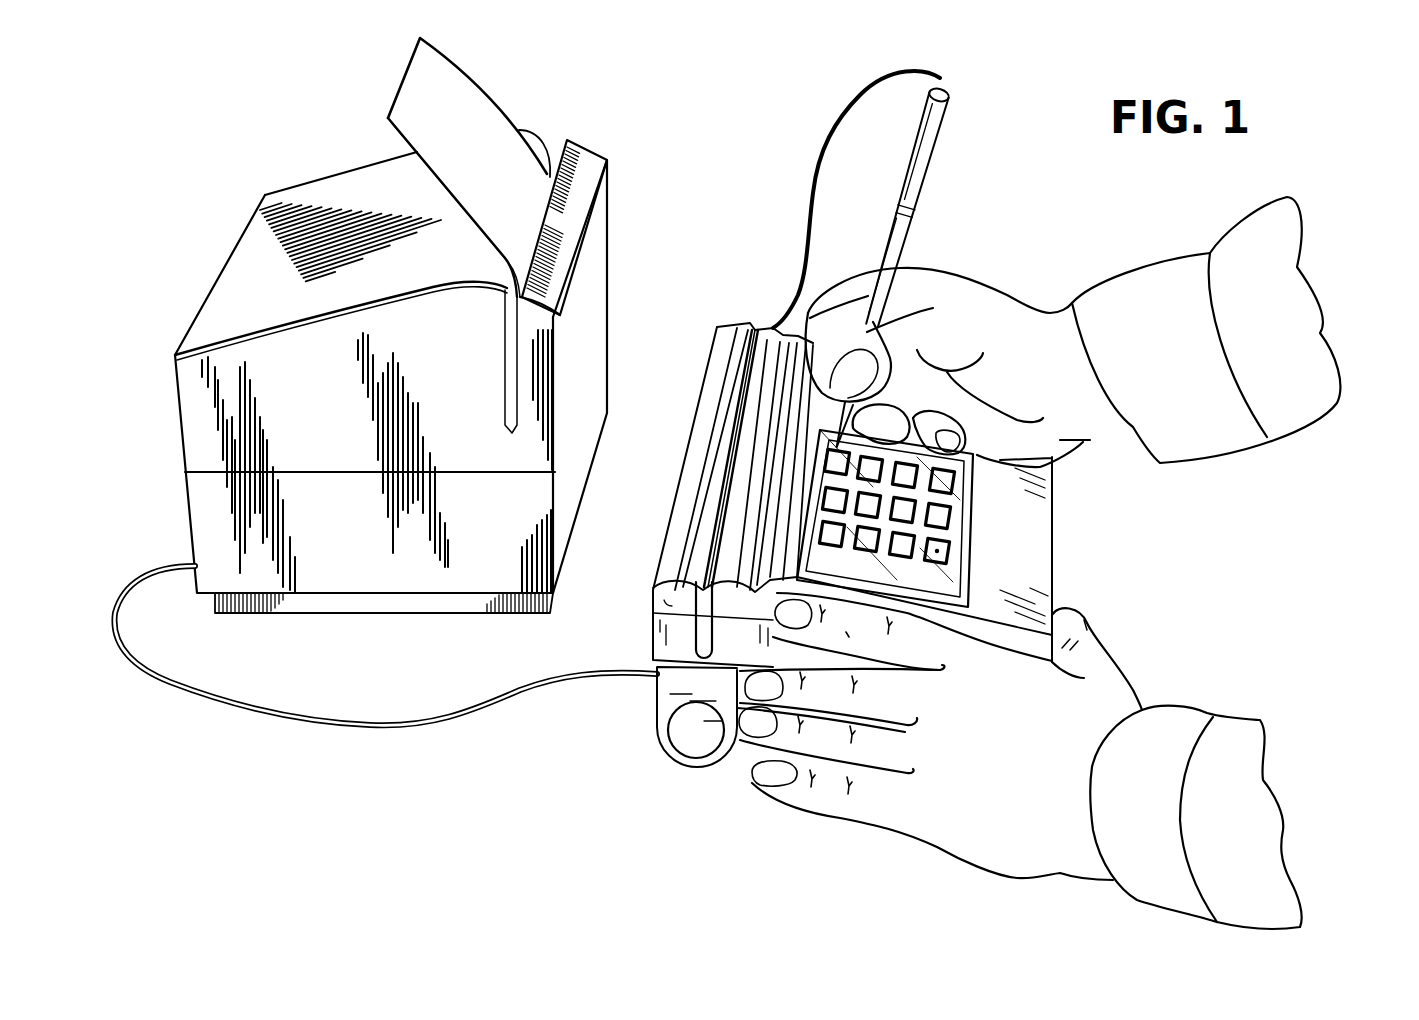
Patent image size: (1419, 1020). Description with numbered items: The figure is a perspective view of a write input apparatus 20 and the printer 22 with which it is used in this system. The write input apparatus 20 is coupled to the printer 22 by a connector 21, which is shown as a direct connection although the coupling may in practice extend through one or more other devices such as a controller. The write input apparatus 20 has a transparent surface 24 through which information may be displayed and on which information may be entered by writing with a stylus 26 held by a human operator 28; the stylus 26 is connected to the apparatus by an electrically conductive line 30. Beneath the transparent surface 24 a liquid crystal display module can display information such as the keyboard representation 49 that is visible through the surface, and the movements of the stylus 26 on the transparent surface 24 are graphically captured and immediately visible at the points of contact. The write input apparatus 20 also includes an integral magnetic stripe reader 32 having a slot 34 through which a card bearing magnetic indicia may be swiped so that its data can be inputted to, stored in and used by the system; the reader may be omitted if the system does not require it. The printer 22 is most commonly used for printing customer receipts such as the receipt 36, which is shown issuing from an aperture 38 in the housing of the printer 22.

The write input apparatus 20 is at (1052, 582).
The connector 21 is at (320, 713).
The printer 22 is at (234, 249).
The transparent surface 24 is at (937, 585).
The stylus 26 is at (937, 152).
The human operator 28 is at (1308, 258).
The electrically conductive line 30 is at (825, 143).
The magnetic stripe reader 32 is at (655, 607).
The slot 34 is at (758, 327).
The receipt 36 is at (485, 95).
The aperture 38 is at (558, 140).
The keyboard representation 49 is at (952, 517).